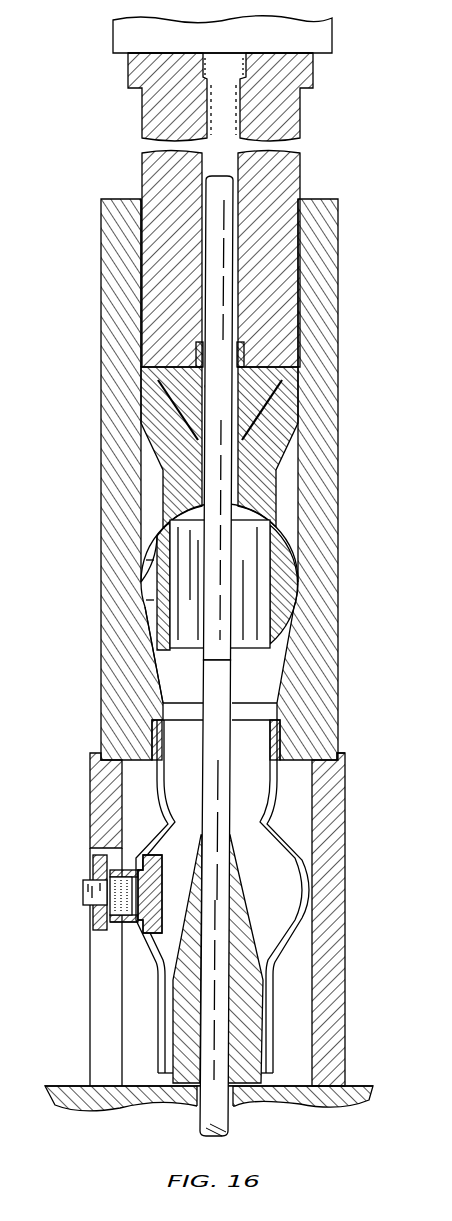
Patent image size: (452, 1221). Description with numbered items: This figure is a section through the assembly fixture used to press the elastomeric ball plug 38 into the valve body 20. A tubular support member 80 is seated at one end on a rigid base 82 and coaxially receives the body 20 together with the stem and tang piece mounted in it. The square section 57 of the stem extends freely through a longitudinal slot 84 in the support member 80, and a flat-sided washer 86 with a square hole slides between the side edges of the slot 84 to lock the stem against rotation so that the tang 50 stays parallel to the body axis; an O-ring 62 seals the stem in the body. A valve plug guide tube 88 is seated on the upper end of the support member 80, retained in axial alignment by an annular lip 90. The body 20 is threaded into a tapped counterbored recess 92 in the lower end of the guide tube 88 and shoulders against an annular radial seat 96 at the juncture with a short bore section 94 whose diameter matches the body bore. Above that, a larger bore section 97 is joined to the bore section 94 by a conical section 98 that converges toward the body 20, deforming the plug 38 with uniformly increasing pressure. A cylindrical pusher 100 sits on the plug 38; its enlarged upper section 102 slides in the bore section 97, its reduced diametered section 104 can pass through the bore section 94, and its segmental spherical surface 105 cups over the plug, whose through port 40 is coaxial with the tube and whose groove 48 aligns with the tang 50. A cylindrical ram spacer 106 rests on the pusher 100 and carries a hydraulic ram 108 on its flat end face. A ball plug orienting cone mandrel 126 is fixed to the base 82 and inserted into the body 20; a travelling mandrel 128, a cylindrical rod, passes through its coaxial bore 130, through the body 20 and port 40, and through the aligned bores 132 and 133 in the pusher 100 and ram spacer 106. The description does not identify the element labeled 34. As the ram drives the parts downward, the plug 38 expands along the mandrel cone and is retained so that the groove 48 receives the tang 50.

The hydraulic ram 108 is at (322, 36).
The ram spacer 106 is at (300, 186).
The bore 133 is at (205, 238).
The bore section 97 is at (142, 304).
The bore 132 is at (205, 387).
The enlarged upper section 102 is at (292, 392).
The cylindrical pusher 100 is at (292, 446).
The segmental spherical surface 105 is at (177, 512).
The reduced diametered section 104 is at (283, 487).
The groove 48 is at (155, 565).
The through port 40 is at (270, 578).
The ball plug 38 is at (298, 577).
The conical section 98 is at (154, 668).
The valve plug guide tube 88 is at (99, 695).
The annular radial seat 96 is at (164, 719).
The bore section 94 is at (272, 719).
The tapped counterbored recess 92 is at (158, 740).
The tube flange 34 is at (283, 742).
The travelling mandrel 128 is at (221, 770).
The annular lip 90 is at (343, 756).
The tubular support member 80 is at (345, 813).
The longitudinal slot 84 is at (95, 860).
The body 20 is at (306, 863).
The flat-sided washer 86 is at (110, 875).
The tang 50 is at (145, 880).
The square section 57 is at (83, 896).
The coaxial bore 130 is at (205, 903).
The O-ring 62 is at (106, 926).
The ball plug orienting cone mandrel 126 is at (252, 1033).
The rigid base 82 is at (356, 1088).